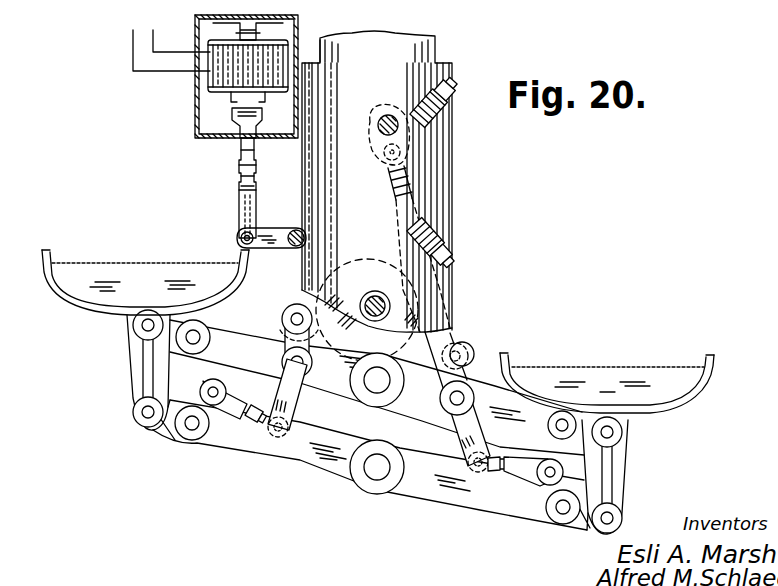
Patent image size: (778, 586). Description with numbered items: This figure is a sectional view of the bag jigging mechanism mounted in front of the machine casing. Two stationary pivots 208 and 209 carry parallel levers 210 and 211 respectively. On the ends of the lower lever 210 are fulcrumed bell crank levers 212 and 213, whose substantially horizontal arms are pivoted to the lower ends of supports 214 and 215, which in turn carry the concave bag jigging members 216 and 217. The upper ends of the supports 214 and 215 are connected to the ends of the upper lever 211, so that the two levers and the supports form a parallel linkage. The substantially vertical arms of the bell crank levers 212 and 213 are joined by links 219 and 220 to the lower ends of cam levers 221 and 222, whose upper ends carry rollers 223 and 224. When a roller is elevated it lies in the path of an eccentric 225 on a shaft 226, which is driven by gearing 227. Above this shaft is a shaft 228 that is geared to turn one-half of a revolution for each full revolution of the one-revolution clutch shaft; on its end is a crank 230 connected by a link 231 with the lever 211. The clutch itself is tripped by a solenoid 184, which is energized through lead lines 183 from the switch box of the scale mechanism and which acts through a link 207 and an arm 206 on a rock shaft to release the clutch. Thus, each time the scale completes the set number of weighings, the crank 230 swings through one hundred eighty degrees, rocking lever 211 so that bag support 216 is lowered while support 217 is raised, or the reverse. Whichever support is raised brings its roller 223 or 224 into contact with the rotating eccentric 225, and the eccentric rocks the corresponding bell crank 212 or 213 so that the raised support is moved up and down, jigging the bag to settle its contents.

The lead lines 183 is at (133, 88).
The solenoid 184 is at (207, 88).
The arm 206 is at (270, 233).
The link 207 is at (255, 192).
The stationary pivot 208 is at (377, 385).
The stationary pivot 209 is at (377, 470).
The lever 210 is at (465, 505).
The lever 211 is at (420, 398).
The bell crank lever 212 is at (162, 402).
The bell crank lever 213 is at (585, 522).
The support 214 is at (142, 380).
The support 215 is at (620, 468).
The bag jigging member 216 is at (145, 272).
The bag jigging member 217 is at (617, 378).
The link 219 is at (231, 411).
The link 220 is at (528, 474).
The cam lever 221 is at (293, 403).
The cam lever 222 is at (482, 438).
The roller 223 is at (283, 320).
The roller 224 is at (470, 348).
The eccentric 225 is at (402, 345).
The shaft 226 is at (392, 301).
The gearing 227 is at (496, 8).
The shaft 228 is at (384, 118).
The crank 230 is at (407, 133).
The link 231 is at (450, 327).